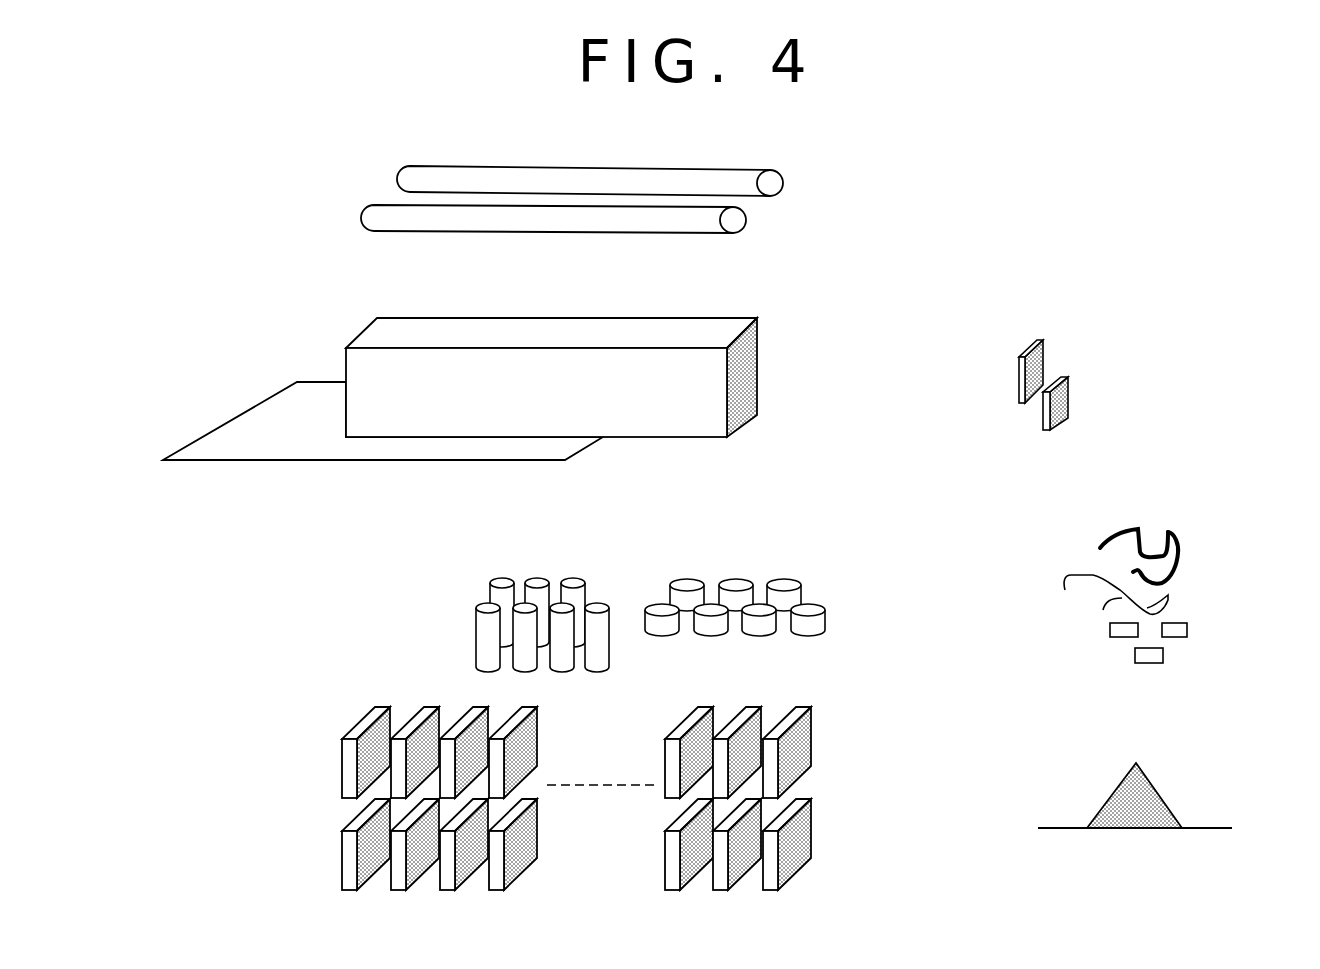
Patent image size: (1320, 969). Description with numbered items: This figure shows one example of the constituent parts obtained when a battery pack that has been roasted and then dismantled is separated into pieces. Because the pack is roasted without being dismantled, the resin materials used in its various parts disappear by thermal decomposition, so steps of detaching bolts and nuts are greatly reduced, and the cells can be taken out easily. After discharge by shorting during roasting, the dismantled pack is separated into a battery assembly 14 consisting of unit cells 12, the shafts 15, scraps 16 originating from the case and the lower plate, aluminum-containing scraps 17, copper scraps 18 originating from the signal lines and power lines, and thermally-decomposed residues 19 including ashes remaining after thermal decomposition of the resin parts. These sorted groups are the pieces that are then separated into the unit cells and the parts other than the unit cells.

The unit cell 12 is at (366, 735).
The battery assembly 14 is at (597, 734).
The shafts 15 is at (737, 181).
The scraps originating from the case and the lower plate 16 is at (800, 323).
The aluminum-containing scraps 17 is at (1060, 385).
The copper scraps 18 is at (1203, 523).
The thermally-decomposed residues 19 is at (1160, 792).